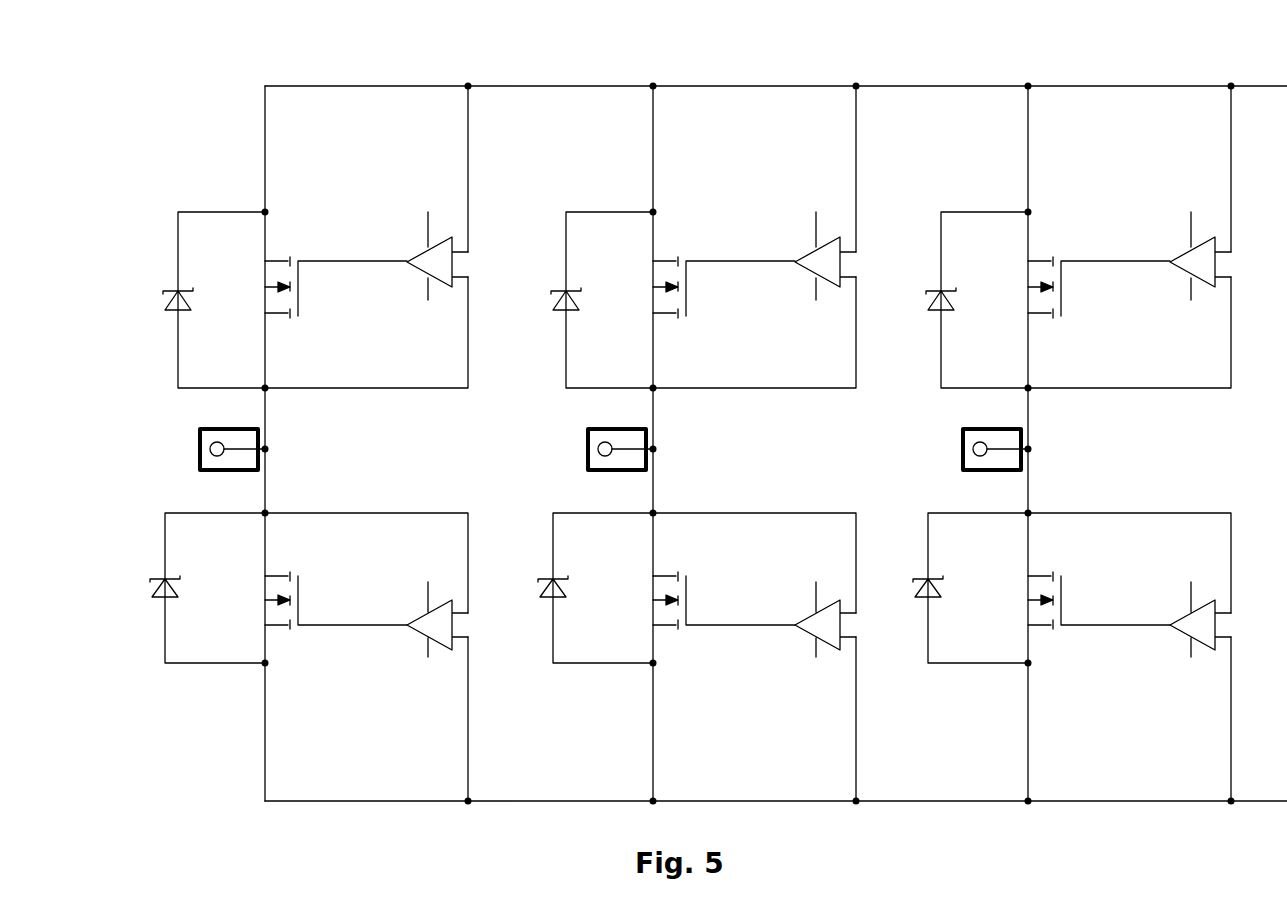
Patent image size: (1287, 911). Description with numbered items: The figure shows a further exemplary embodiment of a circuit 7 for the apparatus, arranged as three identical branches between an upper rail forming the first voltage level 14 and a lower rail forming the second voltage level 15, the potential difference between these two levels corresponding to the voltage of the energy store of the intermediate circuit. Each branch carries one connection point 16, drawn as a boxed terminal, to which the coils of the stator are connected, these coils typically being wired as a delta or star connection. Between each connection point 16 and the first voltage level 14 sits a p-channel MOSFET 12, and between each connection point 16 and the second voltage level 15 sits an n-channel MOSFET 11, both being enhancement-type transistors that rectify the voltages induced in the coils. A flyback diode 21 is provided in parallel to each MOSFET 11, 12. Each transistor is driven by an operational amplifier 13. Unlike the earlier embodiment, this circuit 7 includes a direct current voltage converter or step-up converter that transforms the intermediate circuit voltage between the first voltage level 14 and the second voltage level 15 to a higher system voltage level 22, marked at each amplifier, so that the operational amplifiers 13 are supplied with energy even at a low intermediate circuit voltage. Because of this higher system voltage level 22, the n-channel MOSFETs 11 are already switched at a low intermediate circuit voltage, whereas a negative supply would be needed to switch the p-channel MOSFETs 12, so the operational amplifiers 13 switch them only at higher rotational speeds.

The circuit 7 is at (920, 68).
The n-channel MOSFET 11 is at (313, 603).
The p-channel MOSFET 12 is at (302, 243).
The operational amplifier 13 is at (1180, 262).
The first voltage level 14 is at (717, 85).
The second voltage level 15 is at (352, 800).
The connection point 16 is at (232, 437).
The flyback diode 21 is at (155, 295).
The system voltage level 22 is at (812, 288).